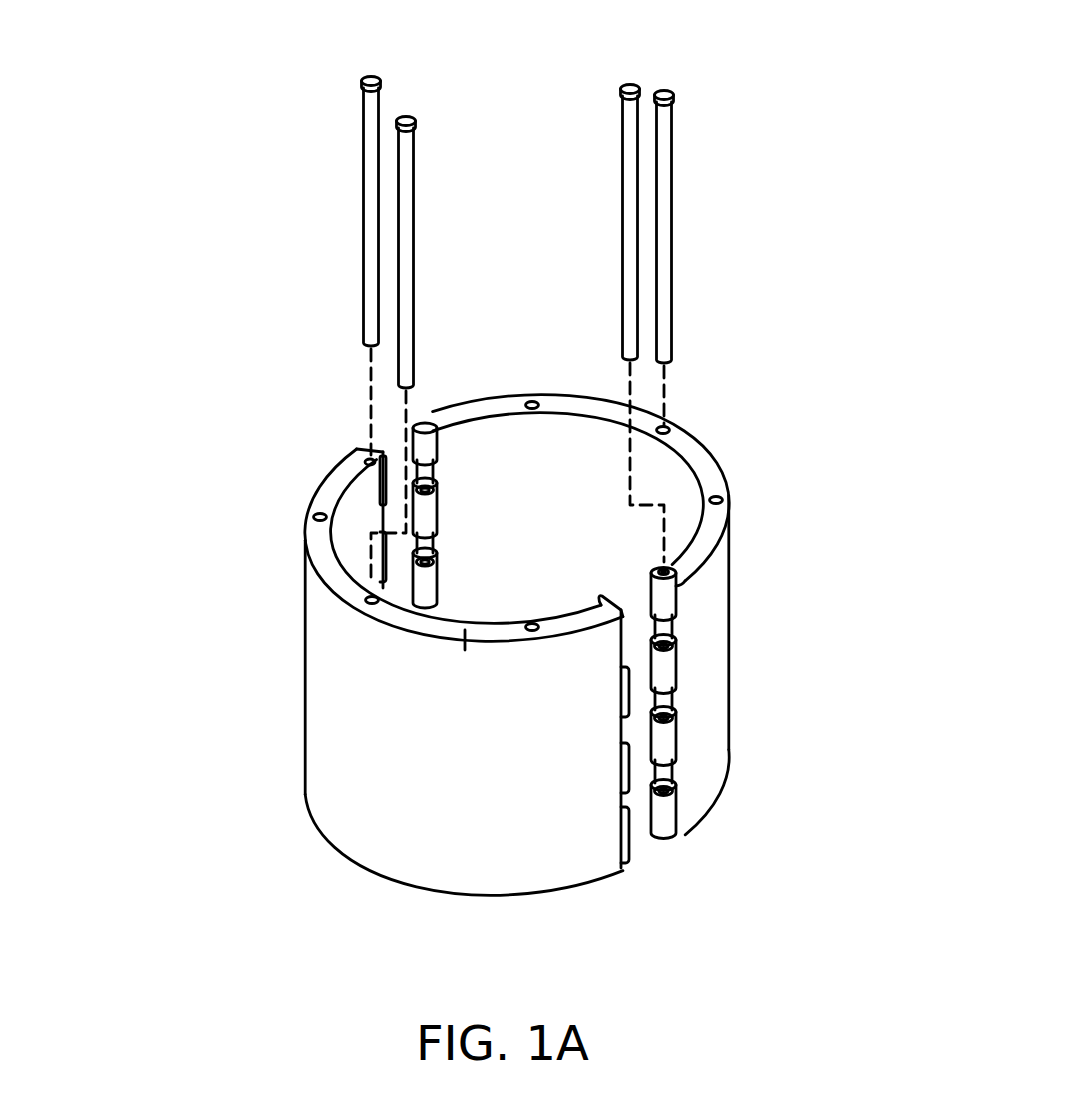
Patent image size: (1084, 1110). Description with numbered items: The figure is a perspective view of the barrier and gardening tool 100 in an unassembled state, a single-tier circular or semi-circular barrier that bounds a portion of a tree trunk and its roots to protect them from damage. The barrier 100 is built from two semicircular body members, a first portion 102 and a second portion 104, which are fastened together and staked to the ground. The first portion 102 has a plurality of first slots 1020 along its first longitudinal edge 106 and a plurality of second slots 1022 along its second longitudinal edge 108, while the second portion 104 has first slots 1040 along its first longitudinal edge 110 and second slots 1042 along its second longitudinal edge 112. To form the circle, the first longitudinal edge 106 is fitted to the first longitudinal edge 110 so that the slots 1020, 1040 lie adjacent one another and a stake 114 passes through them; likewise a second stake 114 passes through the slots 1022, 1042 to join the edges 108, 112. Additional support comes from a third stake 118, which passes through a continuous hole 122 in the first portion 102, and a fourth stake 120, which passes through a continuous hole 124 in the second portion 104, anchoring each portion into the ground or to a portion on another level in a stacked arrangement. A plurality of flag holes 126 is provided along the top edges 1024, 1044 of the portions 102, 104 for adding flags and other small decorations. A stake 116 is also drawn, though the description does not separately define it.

The barrier and gardening tool 100 is at (303, 326).
The first portion 102 is at (712, 578).
The second portion 104 is at (310, 783).
The first longitudinal edge 106 is at (677, 773).
The second longitudinal edge 108 is at (519, 487).
The first longitudinal edge 110 is at (650, 728).
The second longitudinal edge 112 is at (381, 470).
The stake 114 is at (622, 167).
The pin 116 is at (363, 118).
The third stake 118 is at (672, 167).
The fourth stake 120 is at (415, 218).
The continuous hole 122 is at (667, 430).
The continuous hole 124 is at (372, 600).
The flag holes 126 is at (314, 518).
The first slots 1020 is at (641, 748).
The second slots 1022 is at (423, 505).
The top edge 1024 is at (729, 517).
The first slots 1040 is at (628, 808).
The second slots 1042 is at (378, 548).
The top edge 1044 is at (465, 632).